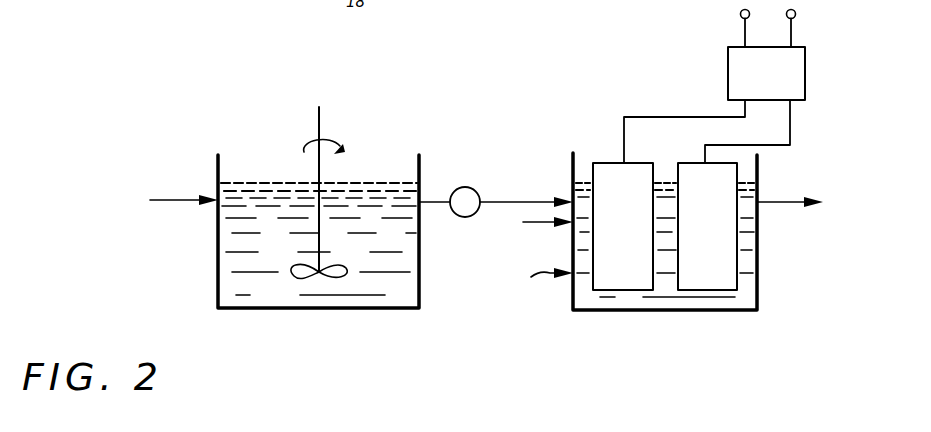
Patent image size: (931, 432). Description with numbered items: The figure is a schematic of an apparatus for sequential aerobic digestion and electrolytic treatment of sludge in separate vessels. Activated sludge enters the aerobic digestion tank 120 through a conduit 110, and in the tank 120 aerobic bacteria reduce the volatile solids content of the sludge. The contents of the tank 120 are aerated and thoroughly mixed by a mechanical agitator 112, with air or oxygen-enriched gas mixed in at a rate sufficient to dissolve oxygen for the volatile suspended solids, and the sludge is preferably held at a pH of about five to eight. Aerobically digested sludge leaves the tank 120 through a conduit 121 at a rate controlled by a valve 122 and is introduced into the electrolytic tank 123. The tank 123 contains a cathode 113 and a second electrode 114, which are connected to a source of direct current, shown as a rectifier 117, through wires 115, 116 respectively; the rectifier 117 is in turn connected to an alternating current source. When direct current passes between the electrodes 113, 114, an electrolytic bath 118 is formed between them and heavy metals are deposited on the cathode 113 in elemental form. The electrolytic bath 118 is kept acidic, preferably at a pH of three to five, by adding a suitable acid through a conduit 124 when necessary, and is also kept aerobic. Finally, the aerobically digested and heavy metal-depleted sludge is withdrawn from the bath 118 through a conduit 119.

The conduit 110 is at (176, 200).
The mechanical agitator 112 is at (324, 281).
The cathode electrode 113 is at (619, 291).
The electrode 114 is at (720, 291).
The wire 115 is at (662, 117).
The wire 116 is at (787, 146).
The rectifier 117 is at (805, 65).
The electrolytic bath 118 is at (666, 280).
The conduit 119 is at (784, 205).
The aerobic digestion tank 120 is at (210, 269).
The conduit 121 is at (446, 203).
The valve 122 is at (463, 187).
The electrolytic tank 123 is at (545, 284).
The conduit 124 is at (533, 222).